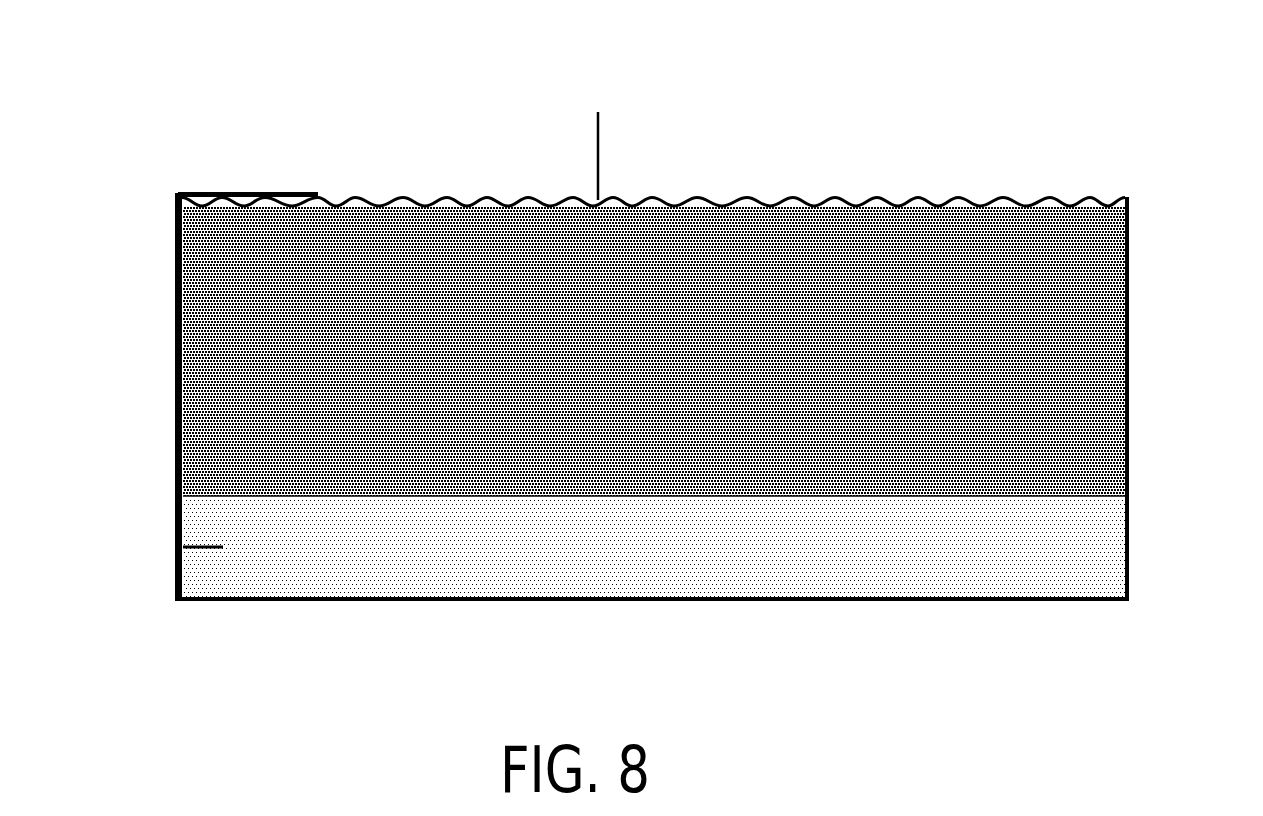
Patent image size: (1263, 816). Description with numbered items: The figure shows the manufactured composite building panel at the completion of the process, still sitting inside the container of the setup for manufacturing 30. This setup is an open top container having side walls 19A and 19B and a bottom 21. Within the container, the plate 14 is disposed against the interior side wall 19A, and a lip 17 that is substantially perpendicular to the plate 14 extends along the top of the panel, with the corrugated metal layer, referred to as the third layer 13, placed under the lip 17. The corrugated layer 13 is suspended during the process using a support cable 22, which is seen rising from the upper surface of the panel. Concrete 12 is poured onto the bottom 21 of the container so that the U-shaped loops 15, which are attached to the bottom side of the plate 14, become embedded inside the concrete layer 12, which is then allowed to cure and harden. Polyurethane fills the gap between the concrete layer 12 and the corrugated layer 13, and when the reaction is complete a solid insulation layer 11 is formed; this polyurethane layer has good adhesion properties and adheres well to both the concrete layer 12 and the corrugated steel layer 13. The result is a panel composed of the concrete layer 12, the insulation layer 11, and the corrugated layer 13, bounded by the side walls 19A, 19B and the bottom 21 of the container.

The setup for manufacturing 30 is at (443, 150).
The insulation layer 11 is at (1110, 408).
The concrete layer 12 is at (357, 567).
The corrugated layer 13 is at (923, 198).
The plate 14 is at (180, 297).
The U-shaped loops 15 is at (208, 545).
The lip 17 is at (203, 193).
The side wall 19A is at (178, 330).
The side wall 19B is at (1130, 292).
The bottom 21 is at (903, 600).
The support cable 22 is at (600, 148).